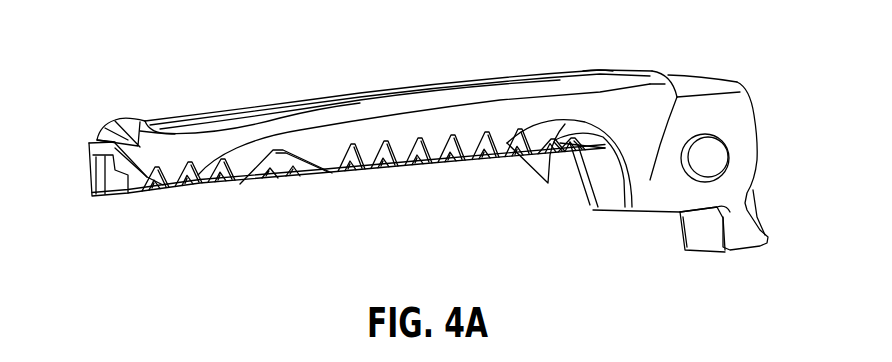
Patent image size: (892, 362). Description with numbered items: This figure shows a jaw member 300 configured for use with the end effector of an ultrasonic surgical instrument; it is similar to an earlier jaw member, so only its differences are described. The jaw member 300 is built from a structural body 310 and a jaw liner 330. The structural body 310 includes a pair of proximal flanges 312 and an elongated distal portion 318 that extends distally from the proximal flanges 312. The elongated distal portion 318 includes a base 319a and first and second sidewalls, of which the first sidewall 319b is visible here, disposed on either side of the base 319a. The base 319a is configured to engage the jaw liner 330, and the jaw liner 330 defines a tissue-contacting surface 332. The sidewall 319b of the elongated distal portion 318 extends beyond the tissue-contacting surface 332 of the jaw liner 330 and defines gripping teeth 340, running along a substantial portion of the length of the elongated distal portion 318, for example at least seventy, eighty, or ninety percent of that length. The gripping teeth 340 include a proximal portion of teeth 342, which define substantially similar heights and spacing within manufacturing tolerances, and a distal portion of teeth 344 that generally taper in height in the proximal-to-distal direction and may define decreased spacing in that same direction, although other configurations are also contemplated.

The jaw member 300 is at (313, 51).
The structural body 310 is at (448, 112).
The proximal flanges 312 is at (610, 187).
The elongated distal portion 318 is at (585, 100).
The base 319a is at (188, 112).
The first sidewall 319b is at (295, 118).
The jaw liner 330 is at (288, 177).
The tissue-contacting surface 332 is at (257, 188).
The gripping teeth 340 is at (168, 178).
The proximal portion of teeth 342 is at (522, 170).
The distal portion of teeth 344 is at (255, 198).